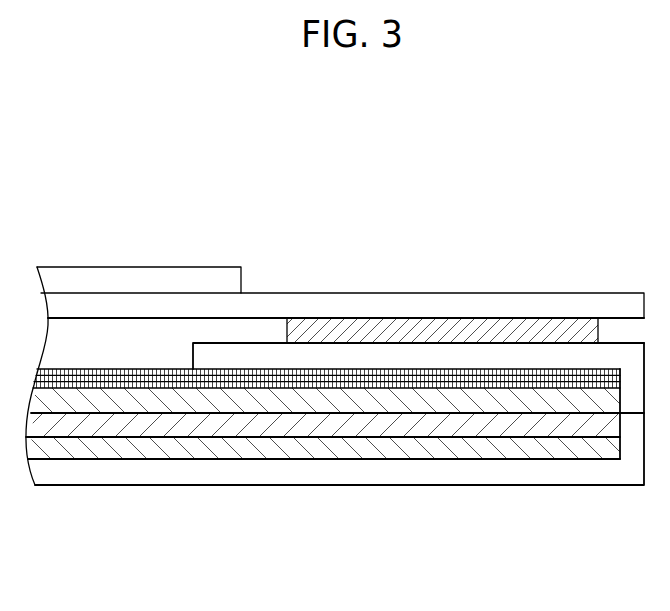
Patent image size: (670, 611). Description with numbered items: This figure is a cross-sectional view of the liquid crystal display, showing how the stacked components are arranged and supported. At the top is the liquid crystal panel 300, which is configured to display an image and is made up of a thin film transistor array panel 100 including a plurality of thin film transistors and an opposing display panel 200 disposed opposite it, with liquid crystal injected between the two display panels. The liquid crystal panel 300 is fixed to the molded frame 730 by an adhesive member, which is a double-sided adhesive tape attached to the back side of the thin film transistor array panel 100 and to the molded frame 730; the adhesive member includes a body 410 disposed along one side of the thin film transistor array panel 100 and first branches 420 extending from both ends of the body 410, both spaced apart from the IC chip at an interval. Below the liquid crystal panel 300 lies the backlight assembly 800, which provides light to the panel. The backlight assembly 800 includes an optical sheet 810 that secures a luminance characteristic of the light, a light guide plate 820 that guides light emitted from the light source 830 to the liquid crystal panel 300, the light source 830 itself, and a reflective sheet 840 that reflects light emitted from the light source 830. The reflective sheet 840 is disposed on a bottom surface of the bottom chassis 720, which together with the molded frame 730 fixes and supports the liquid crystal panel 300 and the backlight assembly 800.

The thin film transistor array panel 100 is at (78, 187).
The opposing display panel 200 is at (103, 278).
The liquid crystal panel 300 is at (340, 234).
The body 410 is at (538, 327).
The first branches 420 is at (317, 328).
The bottom chassis 720 is at (507, 470).
The molded frame 730 is at (432, 356).
The backlight assembly 800 is at (325, 482).
The optical sheet 810 is at (146, 373).
The light guide plate 820 is at (247, 402).
The light source 830 is at (297, 427).
The reflective sheet 840 is at (163, 556).